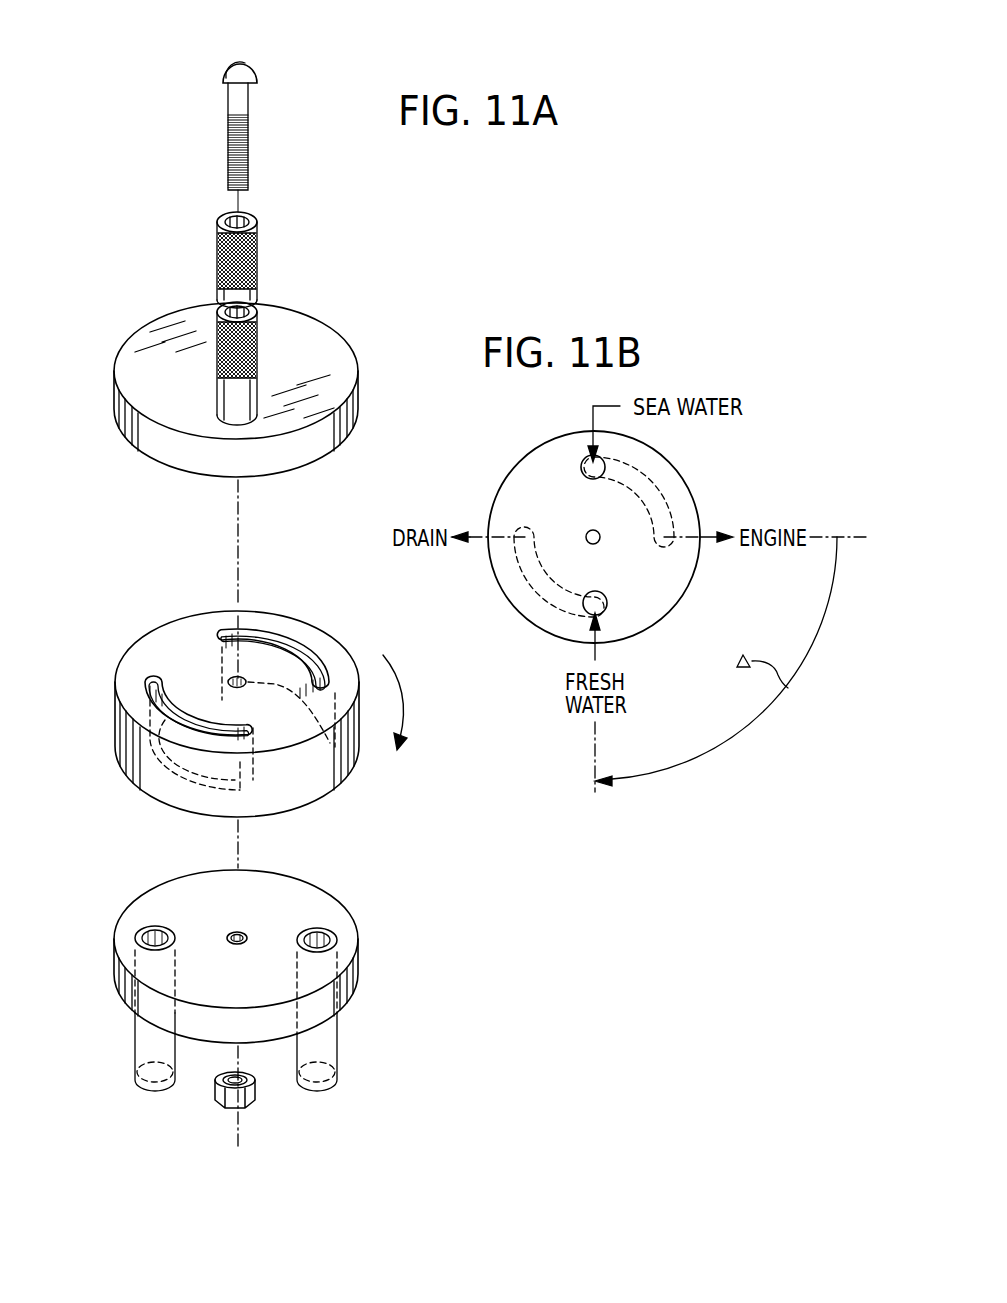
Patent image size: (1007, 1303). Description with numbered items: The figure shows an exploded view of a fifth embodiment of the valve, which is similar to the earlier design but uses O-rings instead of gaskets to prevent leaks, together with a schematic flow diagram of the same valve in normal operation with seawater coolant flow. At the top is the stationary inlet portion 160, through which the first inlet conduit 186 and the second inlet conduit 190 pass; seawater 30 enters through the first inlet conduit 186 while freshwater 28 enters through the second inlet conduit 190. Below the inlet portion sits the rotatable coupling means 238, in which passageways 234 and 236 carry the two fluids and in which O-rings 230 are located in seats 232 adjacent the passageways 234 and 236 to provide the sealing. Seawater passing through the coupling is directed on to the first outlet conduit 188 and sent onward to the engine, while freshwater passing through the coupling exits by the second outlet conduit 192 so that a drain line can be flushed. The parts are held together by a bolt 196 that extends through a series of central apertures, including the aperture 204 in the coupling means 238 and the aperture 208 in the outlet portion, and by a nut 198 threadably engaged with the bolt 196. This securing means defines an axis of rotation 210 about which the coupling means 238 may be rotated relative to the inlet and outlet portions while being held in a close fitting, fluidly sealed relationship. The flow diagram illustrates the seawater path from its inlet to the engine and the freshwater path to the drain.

In FIG. 11A, the bolt 196 is at (250, 102).
In FIG. 11A, the first inlet conduit 186 is at (257, 228).
In FIG. 11A, the seawater 30 is at (207, 183).
In FIG. 11A, the freshwater 28 is at (266, 294).
In FIG. 11A, the stationary inlet portion 160 is at (360, 367).
In FIG. 11A, the second inlet conduit 190 is at (215, 398).
In FIG. 11A, the axis of rotation 210 is at (238, 540).
In FIG. 11A, the coupling means 238 is at (330, 637).
In FIG. 11B, the coupling means 238 is at (523, 453).
In FIG. 11A, the O-rings 230 is at (270, 620).
In FIG. 11A, the seats 232 is at (290, 647).
In FIG. 11A, the aperture 204 is at (227, 682).
In FIG. 11B, the aperture 204 is at (600, 543).
In FIG. 11A, the passageway 236 is at (310, 758).
In FIG. 11B, the passageway 236 is at (663, 492).
In FIG. 11A, the passageway 234 is at (253, 773).
In FIG. 11B, the passageway 234 is at (528, 585).
In FIG. 11A, the aperture 208 is at (245, 935).
In FIG. 11A, the second outlet conduit 192 is at (155, 1082).
In FIG. 11A, the first outlet conduit 188 is at (337, 1058).
In FIG. 11A, the nut 198 is at (240, 1108).